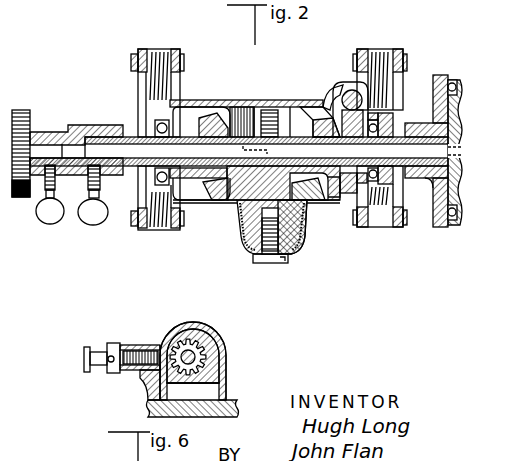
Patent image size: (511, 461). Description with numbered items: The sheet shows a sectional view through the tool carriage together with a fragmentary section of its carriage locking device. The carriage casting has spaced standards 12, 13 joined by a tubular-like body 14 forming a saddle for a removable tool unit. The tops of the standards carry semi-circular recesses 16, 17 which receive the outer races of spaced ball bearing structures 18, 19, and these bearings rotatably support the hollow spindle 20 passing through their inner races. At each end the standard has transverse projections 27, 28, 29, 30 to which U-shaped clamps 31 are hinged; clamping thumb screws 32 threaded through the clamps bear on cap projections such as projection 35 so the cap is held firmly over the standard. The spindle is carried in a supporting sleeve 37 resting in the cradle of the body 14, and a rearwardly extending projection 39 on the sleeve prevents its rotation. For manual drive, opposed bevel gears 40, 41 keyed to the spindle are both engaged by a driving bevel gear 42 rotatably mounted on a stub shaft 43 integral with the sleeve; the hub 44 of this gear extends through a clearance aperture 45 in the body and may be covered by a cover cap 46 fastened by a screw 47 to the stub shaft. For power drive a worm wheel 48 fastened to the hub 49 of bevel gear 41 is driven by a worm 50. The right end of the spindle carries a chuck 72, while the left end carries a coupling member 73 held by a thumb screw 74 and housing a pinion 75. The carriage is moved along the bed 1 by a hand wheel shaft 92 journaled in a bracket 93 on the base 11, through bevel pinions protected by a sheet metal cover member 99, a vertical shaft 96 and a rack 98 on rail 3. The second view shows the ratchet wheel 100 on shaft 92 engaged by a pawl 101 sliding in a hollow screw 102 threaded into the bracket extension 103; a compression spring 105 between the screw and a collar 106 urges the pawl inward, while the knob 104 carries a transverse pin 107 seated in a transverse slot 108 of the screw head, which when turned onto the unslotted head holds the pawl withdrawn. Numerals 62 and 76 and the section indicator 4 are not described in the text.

In FIG. 6, the base 11 is at (232, 400).
In FIG. 2, the standard 12 is at (147, 113).
In FIG. 2, the standard 13 is at (390, 123).
In FIG. 2, the tubular-like body 14 is at (205, 103).
In FIG. 2, the semi-circular recess 16 is at (166, 120).
In FIG. 2, the semi-circular recess 17 is at (387, 110).
In FIG. 2, the ball bearing structure 18 is at (153, 182).
In FIG. 2, the ball bearing structure 19 is at (378, 133).
In FIG. 2, the hollow spindle 20 is at (138, 146).
In FIG. 2, the transverse projection 27 is at (157, 230).
In FIG. 2, the transverse projection 28 is at (160, 50).
In FIG. 2, the transverse projection 29 is at (378, 222).
In FIG. 2, the transverse projection 30 is at (377, 55).
In FIG. 2, the U-shaped clamp 31 is at (137, 53).
In FIG. 2, the clamping thumb screw 32 is at (5, 220).
In FIG. 2, the projection 35 is at (0, 263).
In FIG. 2, the supporting sleeve 37 is at (307, 104).
In FIG. 2, the rearwardly extending projection 39 is at (266, 110).
In FIG. 2, the bevel gear 40 is at (202, 200).
In FIG. 2, the bevel gear 41 is at (324, 96).
In FIG. 2, the driving bevel gear 42 is at (312, 198).
In FIG. 2, the stub shaft 43 is at (243, 243).
In FIG. 2, the hub 44 is at (297, 240).
In FIG. 2, the clearance aperture 45 is at (235, 203).
In FIG. 2, the cover cap 46 is at (300, 238).
In FIG. 2, the screw 47 is at (262, 263).
In FIG. 2, the worm wheel 48 is at (337, 88).
In FIG. 2, the hub 49 is at (375, 184).
In FIG. 2, the worm 50 is at (387, 80).
In FIG. 2, the gear 62 is at (5, 45).
In FIG. 2, the chuck 72 is at (455, 220).
In FIG. 2, the coupling member 73 is at (78, 173).
In FIG. 2, the thumb screw 74 is at (93, 210).
In FIG. 2, the pinion 75 is at (25, 110).
In FIG. 2, the hub 76 is at (53, 133).
In FIG. 2, the section line 4 is at (373, 33).
In FIG. 6, the shaft 92 is at (196, 356).
In FIG. 6, the bracket 93 is at (220, 338).
In FIG. 6, the vertical shaft 96 is at (0, 368).
In FIG. 6, the rack 98 is at (0, 428).
In FIG. 6, the sheet metal cover member 99 is at (0, 382).
In FIG. 6, the bed 1 is at (4, 447).
In FIG. 6, the rail 3 is at (7, 356).
In FIG. 6, the ratchet wheel 100 is at (192, 336).
In FIG. 6, the pawl 101 is at (168, 338).
In FIG. 6, the hollow screw 102 is at (125, 370).
In FIG. 6, the extension 103 is at (141, 378).
In FIG. 6, the knob 104 is at (87, 355).
In FIG. 6, the compression spring 105 is at (137, 345).
In FIG. 6, the collar 106 is at (157, 344).
In FIG. 6, the transverse pin 107 is at (102, 368).
In FIG. 6, the transverse slot 108 is at (110, 343).